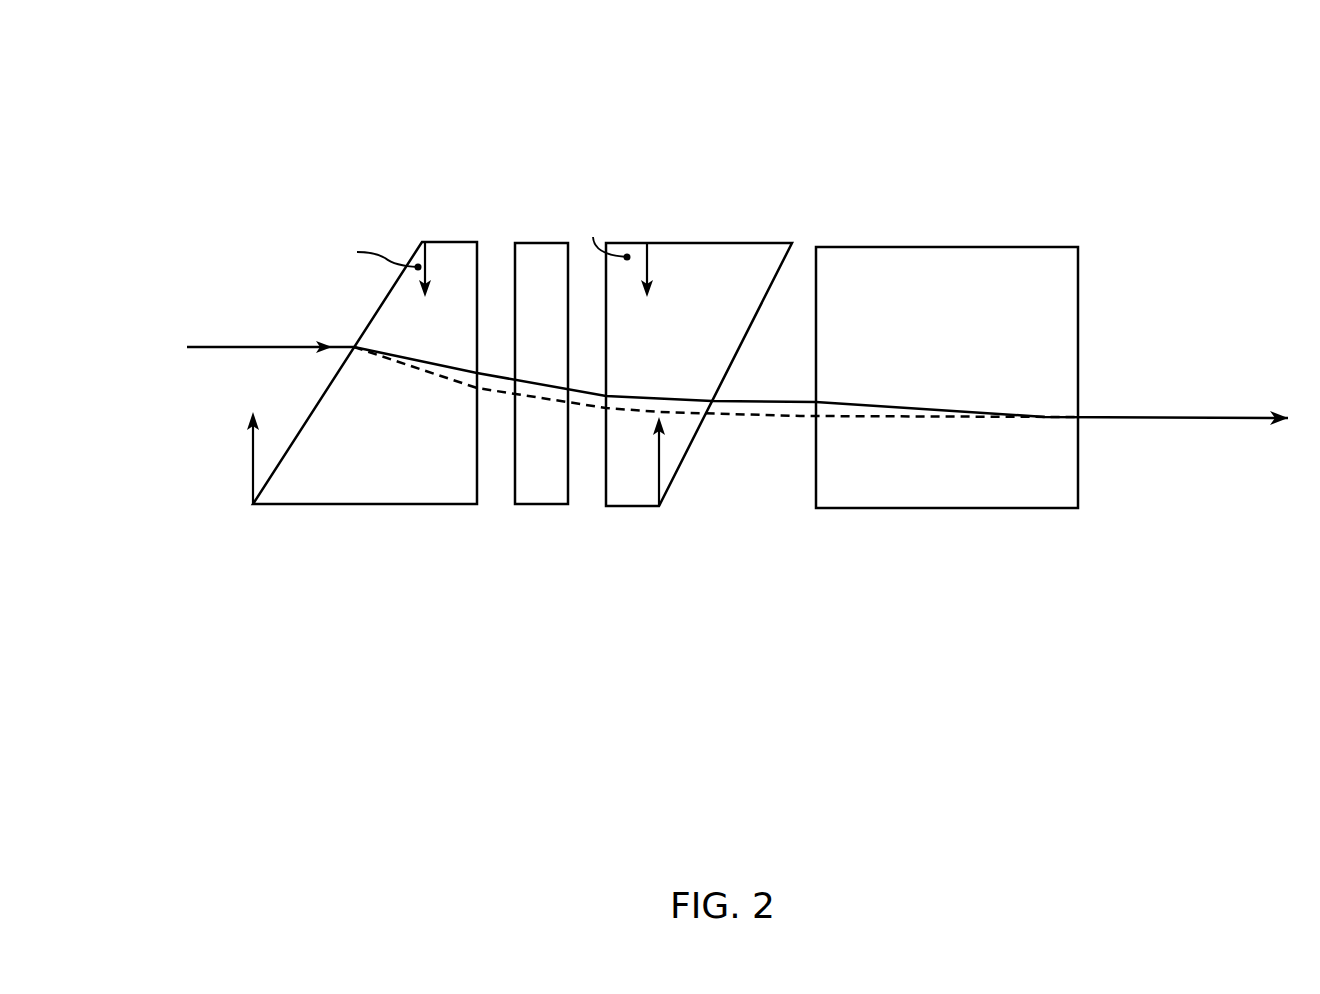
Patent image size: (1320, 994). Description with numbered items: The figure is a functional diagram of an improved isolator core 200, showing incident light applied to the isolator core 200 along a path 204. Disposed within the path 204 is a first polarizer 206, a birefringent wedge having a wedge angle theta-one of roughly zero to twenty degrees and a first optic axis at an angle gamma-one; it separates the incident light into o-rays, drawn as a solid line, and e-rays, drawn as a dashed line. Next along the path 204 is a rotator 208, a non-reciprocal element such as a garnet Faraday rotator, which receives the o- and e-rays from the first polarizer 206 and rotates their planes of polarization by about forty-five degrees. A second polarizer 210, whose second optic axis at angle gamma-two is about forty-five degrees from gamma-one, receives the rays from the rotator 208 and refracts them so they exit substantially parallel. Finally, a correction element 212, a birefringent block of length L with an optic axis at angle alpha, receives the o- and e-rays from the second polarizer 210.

The isolator core 200 is at (128, 66).
The path 204 is at (202, 333).
The first polarizer 206 is at (435, 226).
The rotator 208 is at (540, 226).
The second polarizer 210 is at (683, 228).
The correction element 212 is at (918, 228).